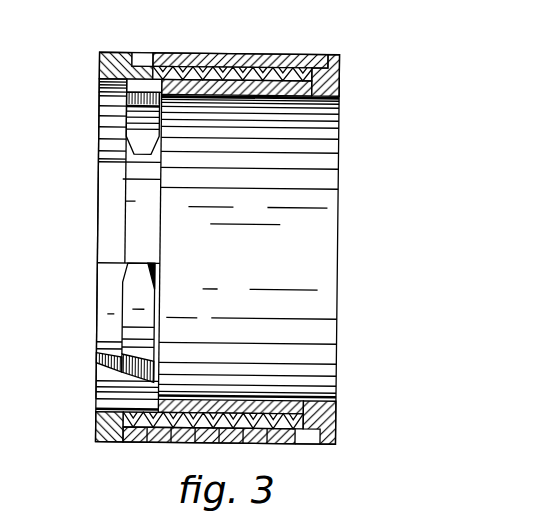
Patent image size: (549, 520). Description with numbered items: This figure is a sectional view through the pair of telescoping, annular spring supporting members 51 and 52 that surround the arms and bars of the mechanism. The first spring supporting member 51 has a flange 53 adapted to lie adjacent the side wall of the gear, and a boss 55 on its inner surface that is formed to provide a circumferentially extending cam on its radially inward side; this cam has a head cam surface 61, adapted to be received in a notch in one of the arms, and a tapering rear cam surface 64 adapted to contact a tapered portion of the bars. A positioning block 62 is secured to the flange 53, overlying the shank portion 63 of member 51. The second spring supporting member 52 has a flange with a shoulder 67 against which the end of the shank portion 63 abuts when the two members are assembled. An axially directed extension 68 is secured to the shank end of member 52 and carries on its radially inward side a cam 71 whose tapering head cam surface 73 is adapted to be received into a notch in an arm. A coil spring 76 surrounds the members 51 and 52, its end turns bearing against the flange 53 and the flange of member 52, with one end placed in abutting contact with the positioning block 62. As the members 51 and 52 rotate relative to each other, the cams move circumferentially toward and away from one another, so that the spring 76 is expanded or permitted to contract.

The spring supporting member 51 is at (102, 50).
The second spring supporting member 52 is at (346, 90).
The flange 53 is at (100, 65).
The boss 55 is at (112, 271).
The head cam surface 61 is at (141, 272).
The positioning block 62 is at (139, 54).
The shank portion 63 is at (333, 75).
The tapering rear cam surface 64 is at (98, 388).
The shoulder 67 is at (306, 76).
The axially directed extension 68 is at (100, 86).
The cam 71 is at (126, 99).
The tapering head cam surface 73 is at (137, 148).
The coil spring 76 is at (244, 52).